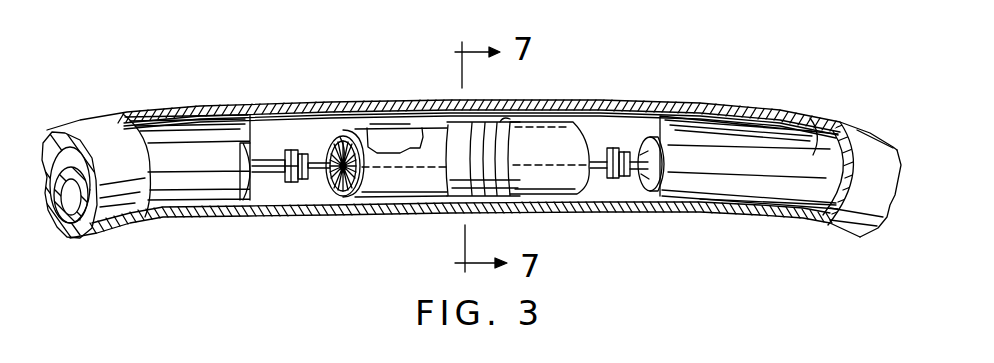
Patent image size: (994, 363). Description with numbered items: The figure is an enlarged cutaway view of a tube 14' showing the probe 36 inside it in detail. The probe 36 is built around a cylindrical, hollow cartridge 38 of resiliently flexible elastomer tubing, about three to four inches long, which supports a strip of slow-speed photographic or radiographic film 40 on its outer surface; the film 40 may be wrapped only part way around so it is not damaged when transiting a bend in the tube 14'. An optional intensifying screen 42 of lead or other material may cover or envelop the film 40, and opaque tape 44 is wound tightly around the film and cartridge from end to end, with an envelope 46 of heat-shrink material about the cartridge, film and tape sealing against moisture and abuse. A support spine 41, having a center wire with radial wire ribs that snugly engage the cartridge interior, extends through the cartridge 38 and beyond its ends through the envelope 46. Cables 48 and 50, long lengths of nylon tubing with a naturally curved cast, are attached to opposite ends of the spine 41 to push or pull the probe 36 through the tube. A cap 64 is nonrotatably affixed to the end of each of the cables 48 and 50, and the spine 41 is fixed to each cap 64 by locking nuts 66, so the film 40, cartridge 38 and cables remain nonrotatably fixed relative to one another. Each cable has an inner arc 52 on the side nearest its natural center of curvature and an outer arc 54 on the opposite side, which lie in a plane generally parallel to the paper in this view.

The tube 14' is at (465, 166).
The probe 36 is at (386, 116).
The cartridge 38 is at (337, 198).
The film 40 is at (378, 122).
The support spine 41 is at (306, 180).
The intensifying screen 42 is at (430, 135).
The opaque tape 44 is at (492, 188).
The envelope 46 is at (538, 121).
The cable 48 is at (158, 136).
The cable 50 is at (749, 134).
The inner arc 52 is at (800, 198).
The outer arc 54 is at (813, 140).
The cap 64 is at (250, 150).
The locking nut 66 is at (288, 152).